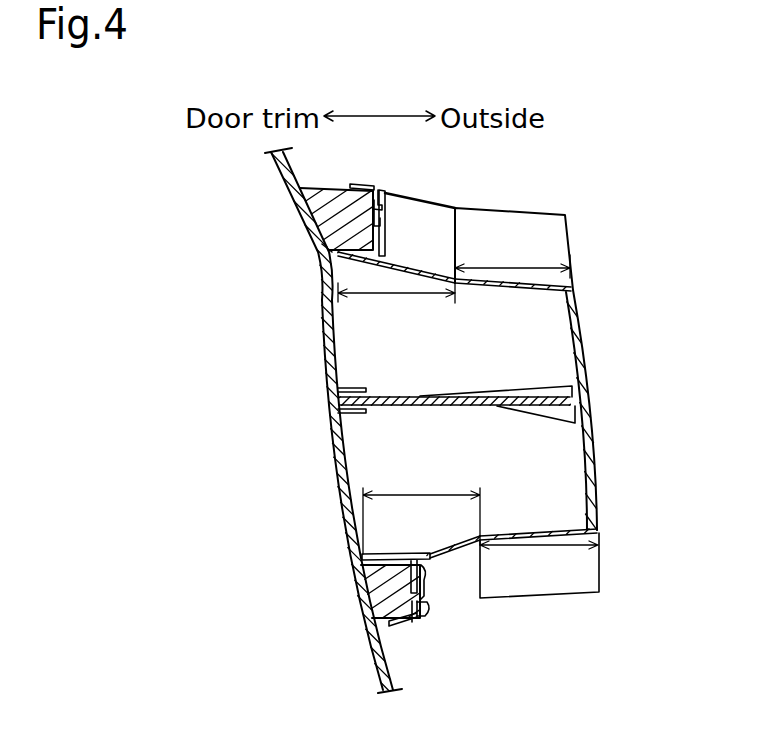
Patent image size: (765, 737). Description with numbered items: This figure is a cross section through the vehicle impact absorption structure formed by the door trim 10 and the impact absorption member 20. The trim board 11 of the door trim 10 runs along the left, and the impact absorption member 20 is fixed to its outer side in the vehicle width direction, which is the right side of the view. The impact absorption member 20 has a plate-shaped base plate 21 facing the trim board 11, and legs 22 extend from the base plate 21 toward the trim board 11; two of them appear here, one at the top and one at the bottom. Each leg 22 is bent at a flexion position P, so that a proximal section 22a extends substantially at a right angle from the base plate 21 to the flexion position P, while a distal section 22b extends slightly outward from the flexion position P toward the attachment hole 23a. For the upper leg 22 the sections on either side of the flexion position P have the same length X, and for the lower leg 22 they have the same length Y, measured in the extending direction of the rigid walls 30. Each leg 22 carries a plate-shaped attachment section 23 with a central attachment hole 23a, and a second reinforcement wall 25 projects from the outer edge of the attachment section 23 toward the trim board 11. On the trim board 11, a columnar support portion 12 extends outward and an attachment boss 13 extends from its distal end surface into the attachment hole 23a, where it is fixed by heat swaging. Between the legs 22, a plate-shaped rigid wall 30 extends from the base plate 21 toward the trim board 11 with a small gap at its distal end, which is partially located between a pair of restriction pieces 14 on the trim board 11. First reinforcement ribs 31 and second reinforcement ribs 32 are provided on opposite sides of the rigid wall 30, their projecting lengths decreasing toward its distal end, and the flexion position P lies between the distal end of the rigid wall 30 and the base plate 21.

The door trim 10 is at (291, 420).
The trim board 11 is at (284, 172).
The support portion 12 is at (342, 190).
The attachment boss 13 is at (380, 216).
The restriction piece 14 is at (378, 408).
The impact absorption member 20 is at (607, 419).
The base plate 21 is at (582, 330).
The leg 22 is at (483, 405).
The proximal section 22a is at (483, 283).
The distal section 22b is at (432, 270).
The attachment section 23 is at (386, 193).
The attachment hole 23a is at (320, 245).
The second reinforcement wall 25 is at (362, 184).
The rigid wall 30 is at (405, 406).
The first reinforcement rib 31 is at (532, 390).
The second reinforcement rib 32 is at (533, 420).
The flexion position P is at (456, 285).
The length X is at (454, 284).
The length Y is at (480, 520).